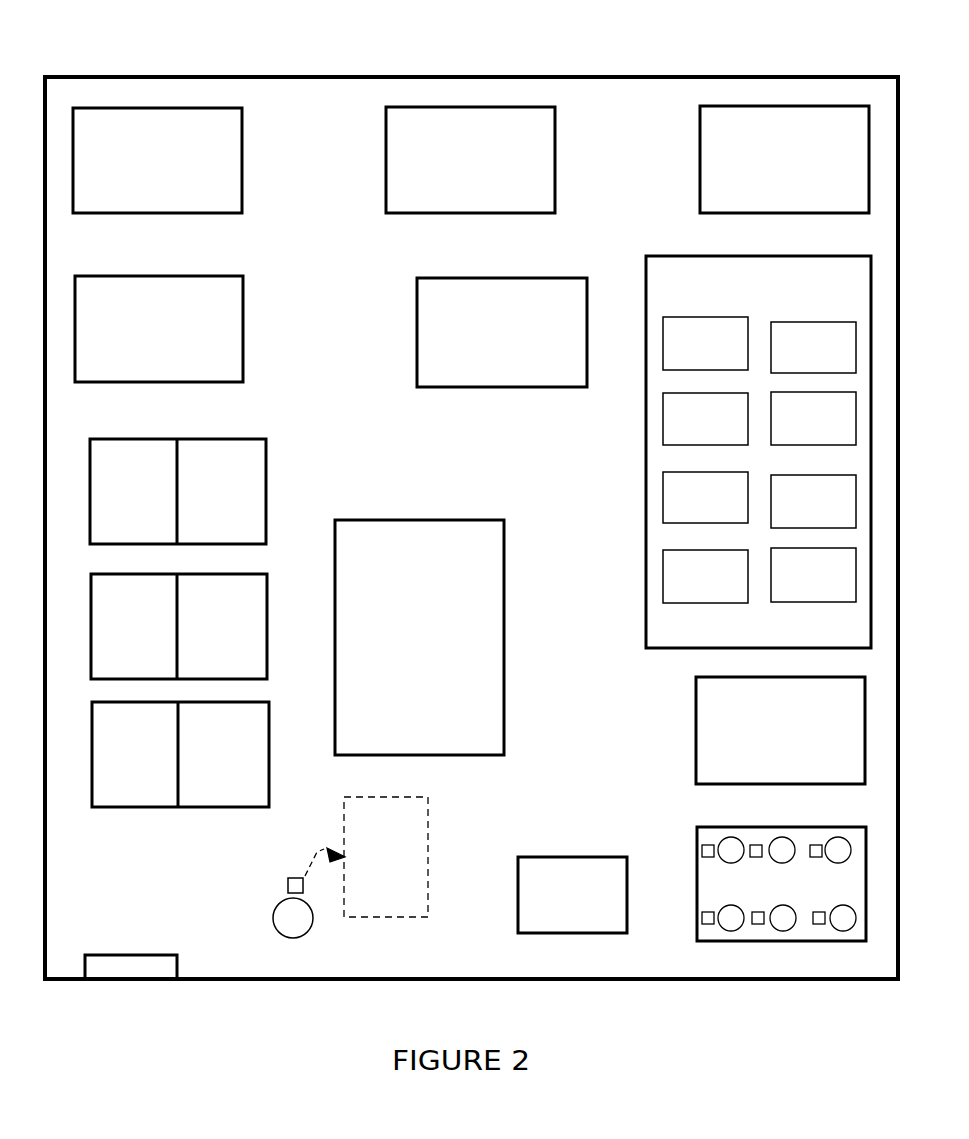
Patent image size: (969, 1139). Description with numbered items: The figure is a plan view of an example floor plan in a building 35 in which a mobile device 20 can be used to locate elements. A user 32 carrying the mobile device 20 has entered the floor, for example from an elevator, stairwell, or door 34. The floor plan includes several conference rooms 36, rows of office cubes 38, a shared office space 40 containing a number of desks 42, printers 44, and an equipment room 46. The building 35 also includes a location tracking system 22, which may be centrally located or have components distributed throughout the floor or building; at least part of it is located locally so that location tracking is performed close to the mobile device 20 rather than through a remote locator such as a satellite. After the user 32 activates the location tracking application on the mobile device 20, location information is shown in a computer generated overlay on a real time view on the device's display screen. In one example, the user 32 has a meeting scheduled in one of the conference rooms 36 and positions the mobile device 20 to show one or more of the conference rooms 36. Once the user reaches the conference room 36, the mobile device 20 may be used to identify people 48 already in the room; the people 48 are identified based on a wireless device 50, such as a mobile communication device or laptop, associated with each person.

The mobile device 20 is at (286, 880).
The location tracking system 22 is at (568, 857).
The user 32 is at (277, 908).
The door 34 is at (147, 955).
The building 35 is at (185, 77).
The conference room 36 is at (244, 165).
The office cube 38 is at (267, 490).
The shared office space 40 is at (729, 452).
The desk 42 is at (663, 335).
The printer 44 is at (417, 333).
The equipment room 46 is at (415, 520).
The people 48 is at (727, 838).
The wireless device 50 is at (811, 845).